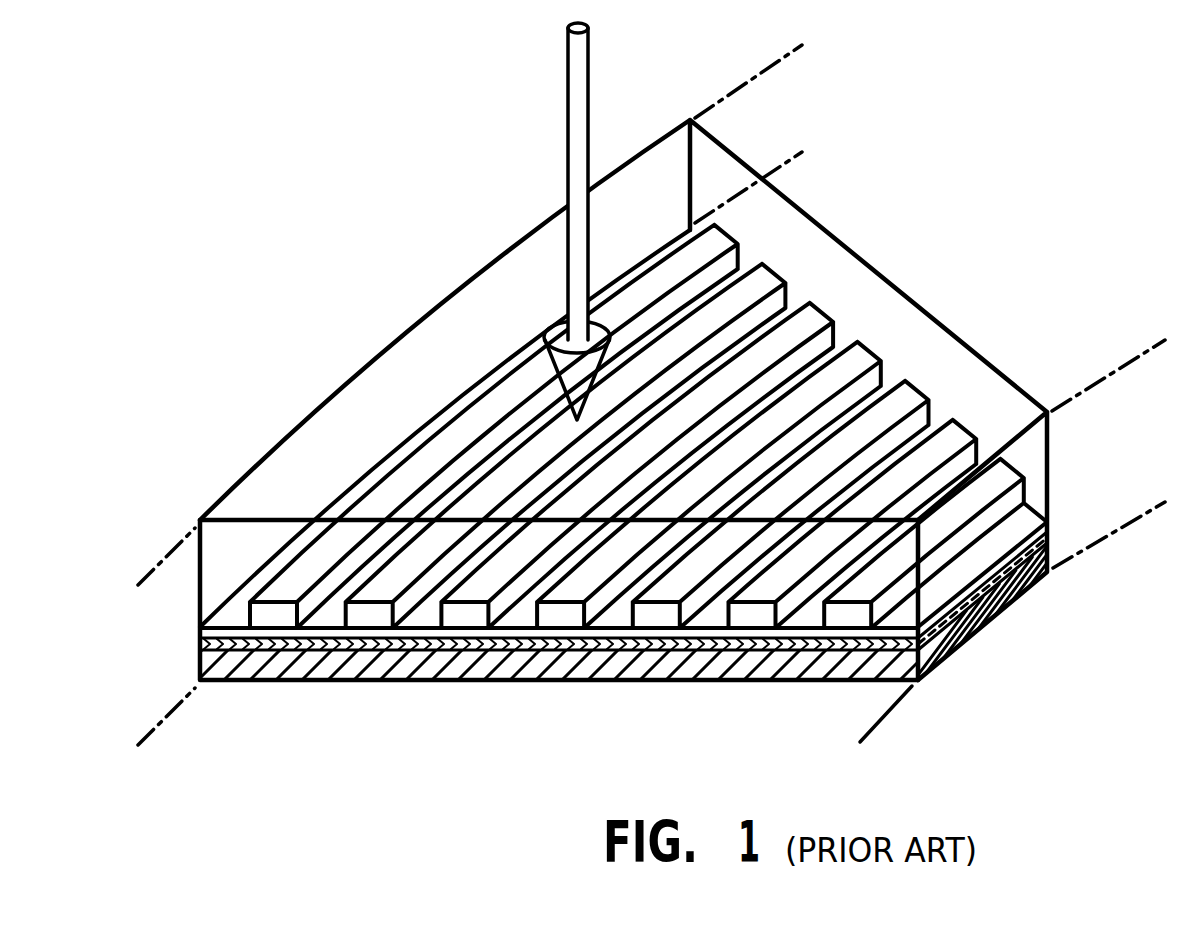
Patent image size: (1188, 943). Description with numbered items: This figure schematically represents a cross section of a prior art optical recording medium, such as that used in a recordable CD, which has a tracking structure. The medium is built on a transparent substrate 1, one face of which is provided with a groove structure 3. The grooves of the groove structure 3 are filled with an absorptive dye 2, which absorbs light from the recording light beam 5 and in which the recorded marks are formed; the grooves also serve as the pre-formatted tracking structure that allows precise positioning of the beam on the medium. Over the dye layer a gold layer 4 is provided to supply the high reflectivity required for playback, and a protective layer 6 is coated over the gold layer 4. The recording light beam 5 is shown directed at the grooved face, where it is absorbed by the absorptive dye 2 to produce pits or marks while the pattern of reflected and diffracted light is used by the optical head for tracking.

The transparent substrate 1 is at (340, 433).
The absorptive dye 2 is at (272, 603).
The groove structure 3 is at (908, 363).
The gold layer 4 is at (200, 644).
The recording light beam 5 is at (568, 60).
The protective layer 6 is at (407, 680).